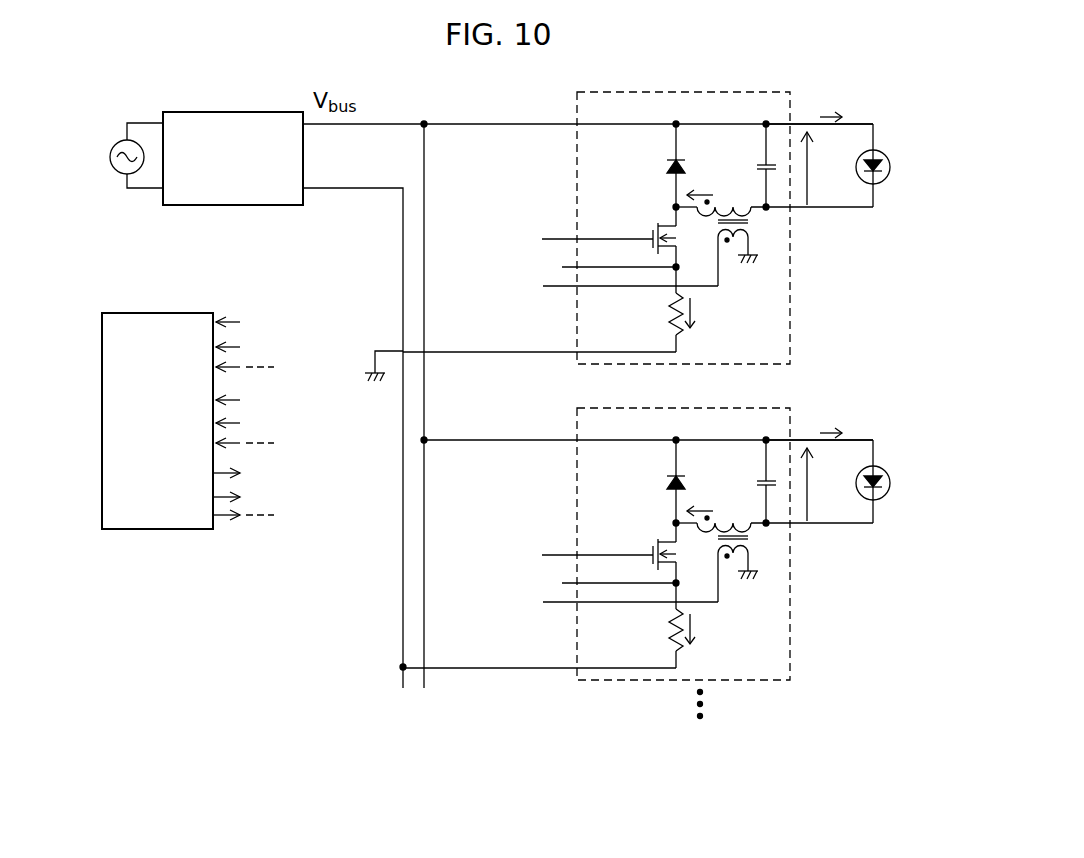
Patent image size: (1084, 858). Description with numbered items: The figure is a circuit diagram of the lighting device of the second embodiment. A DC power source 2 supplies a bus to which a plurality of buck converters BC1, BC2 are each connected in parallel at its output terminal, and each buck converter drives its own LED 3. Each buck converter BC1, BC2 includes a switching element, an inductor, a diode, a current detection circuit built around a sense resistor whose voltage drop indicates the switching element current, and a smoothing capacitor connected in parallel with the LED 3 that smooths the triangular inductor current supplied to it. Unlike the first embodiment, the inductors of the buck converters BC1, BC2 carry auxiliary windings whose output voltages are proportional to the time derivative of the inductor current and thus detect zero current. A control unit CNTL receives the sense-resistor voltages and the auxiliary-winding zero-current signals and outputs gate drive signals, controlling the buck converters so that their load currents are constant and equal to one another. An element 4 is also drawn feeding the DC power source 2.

The DC power source 2 is at (232, 112).
The LED 3 is at (884, 182).
The AC power source 4 is at (118, 142).
The buck converter BC1 is at (692, 92).
The buck converter BC2 is at (692, 408).
The control unit CNTL is at (154, 313).